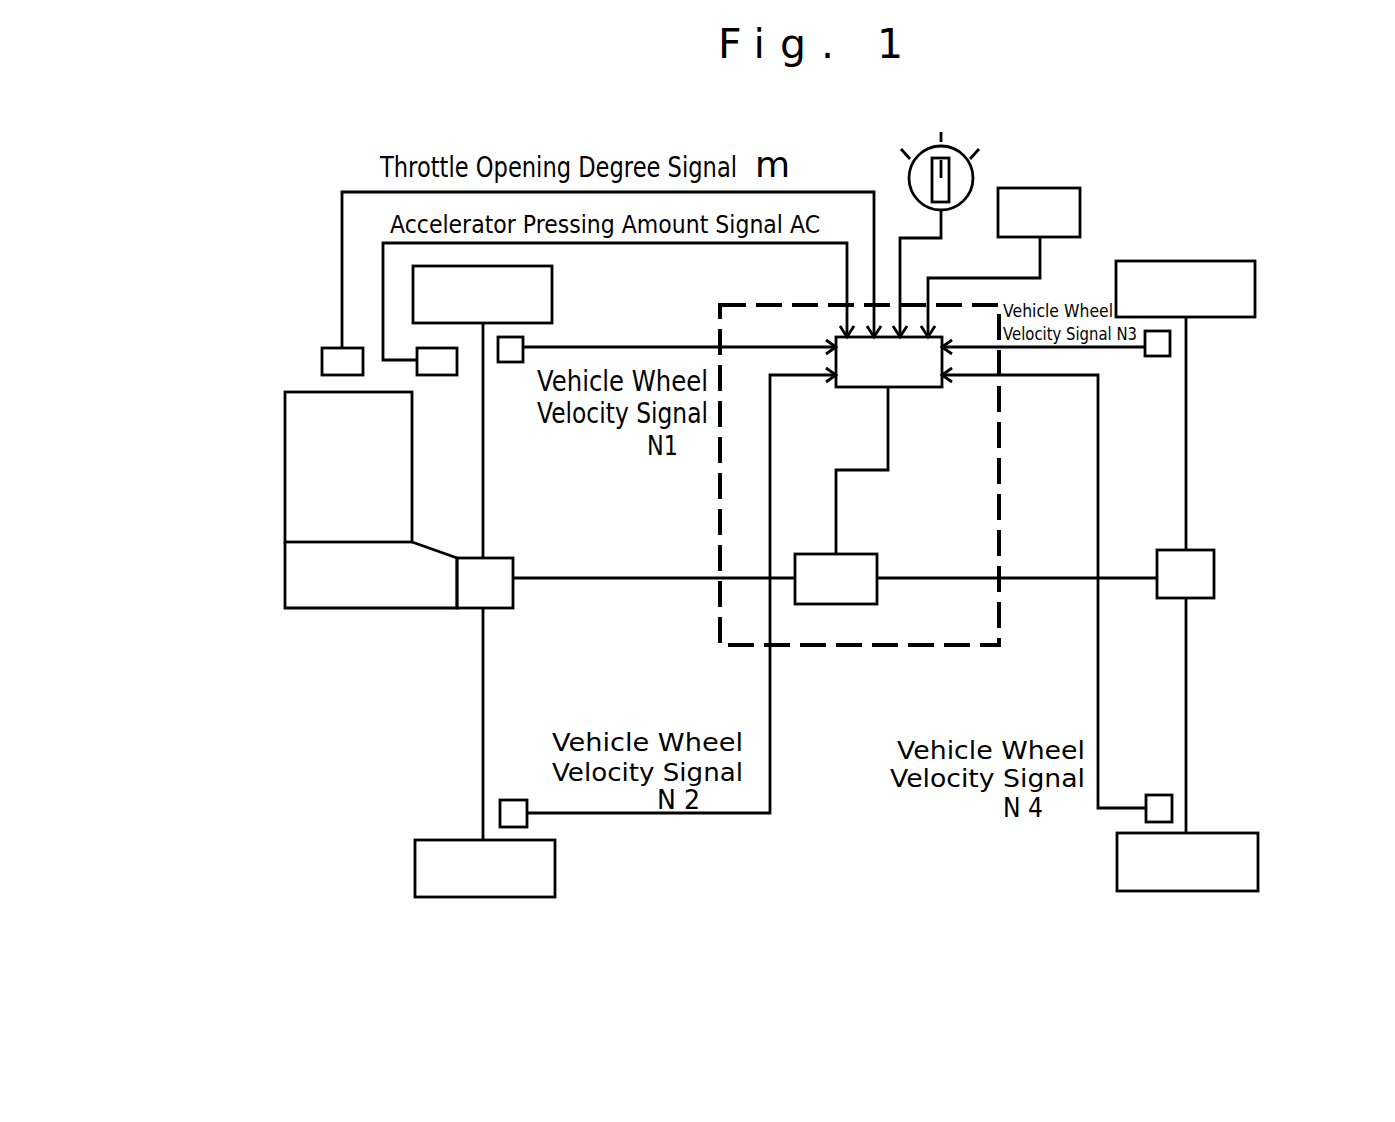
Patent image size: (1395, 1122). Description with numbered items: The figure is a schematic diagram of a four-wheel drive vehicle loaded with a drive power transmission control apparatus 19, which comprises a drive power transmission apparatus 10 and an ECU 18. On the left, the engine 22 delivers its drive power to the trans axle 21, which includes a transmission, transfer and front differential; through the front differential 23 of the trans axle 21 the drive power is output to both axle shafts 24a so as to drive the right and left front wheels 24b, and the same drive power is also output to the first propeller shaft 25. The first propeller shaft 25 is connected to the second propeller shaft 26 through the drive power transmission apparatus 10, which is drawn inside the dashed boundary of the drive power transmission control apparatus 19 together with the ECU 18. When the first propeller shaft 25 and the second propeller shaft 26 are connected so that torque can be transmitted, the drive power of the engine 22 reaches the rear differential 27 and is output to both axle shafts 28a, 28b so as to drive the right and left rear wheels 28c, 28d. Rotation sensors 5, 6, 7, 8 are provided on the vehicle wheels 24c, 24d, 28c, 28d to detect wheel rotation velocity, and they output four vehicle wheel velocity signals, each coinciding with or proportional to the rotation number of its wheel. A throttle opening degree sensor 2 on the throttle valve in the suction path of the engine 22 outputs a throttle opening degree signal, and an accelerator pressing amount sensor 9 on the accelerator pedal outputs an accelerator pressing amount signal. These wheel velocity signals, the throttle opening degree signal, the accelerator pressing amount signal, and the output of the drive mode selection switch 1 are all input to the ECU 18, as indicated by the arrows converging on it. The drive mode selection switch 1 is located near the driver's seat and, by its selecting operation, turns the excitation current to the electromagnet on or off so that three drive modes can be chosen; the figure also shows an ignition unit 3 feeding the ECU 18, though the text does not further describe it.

The drive mode selection switch 1 is at (910, 188).
The throttle opening degree sensor 2 is at (322, 360).
The ignition switch 3 is at (1080, 212).
The rotation sensor 5 is at (508, 362).
The rotation sensor 6 is at (510, 800).
The rotation sensor 7 is at (1157, 356).
The rotation sensor 8 is at (1163, 795).
The accelerator pressing amount sensor 9 is at (437, 375).
The drive power transmission apparatus 10 is at (845, 604).
The ECU 18 is at (912, 388).
The drive power transmission control apparatus 19 is at (808, 648).
The trans axle 21 is at (325, 608).
The engine 22 is at (282, 423).
The front differential 23 is at (513, 568).
The axle shaft 24a is at (483, 467).
The front wheel 24b is at (484, 763).
The vehicle wheel 24c is at (552, 292).
The vehicle wheel 24d is at (555, 862).
The first propeller shaft 25 is at (608, 582).
The second propeller shaft 26 is at (1037, 580).
The rear differential 27 is at (1214, 565).
The axle shaft 28a is at (1186, 420).
The axle shaft 28b is at (1186, 692).
The rear wheel 28c is at (1255, 285).
The rear wheel 28d is at (1258, 858).